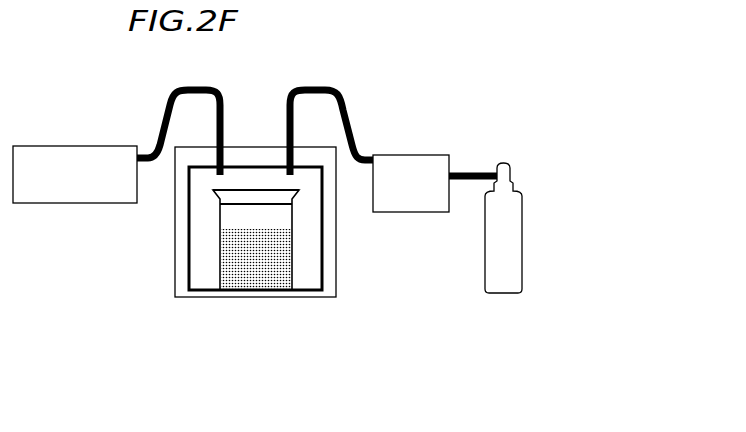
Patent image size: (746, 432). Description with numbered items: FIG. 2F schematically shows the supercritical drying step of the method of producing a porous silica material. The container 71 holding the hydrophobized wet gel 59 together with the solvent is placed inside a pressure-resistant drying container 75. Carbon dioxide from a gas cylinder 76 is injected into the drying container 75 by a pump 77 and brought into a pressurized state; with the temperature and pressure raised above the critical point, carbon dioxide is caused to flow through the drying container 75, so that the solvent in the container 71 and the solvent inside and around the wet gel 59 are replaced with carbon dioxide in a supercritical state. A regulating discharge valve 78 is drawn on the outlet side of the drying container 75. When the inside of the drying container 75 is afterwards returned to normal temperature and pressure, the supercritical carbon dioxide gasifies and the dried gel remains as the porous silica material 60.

The regulating discharge valve 78 is at (121, 155).
The pump 77 is at (425, 163).
The gas cylinder 76 is at (511, 181).
The drying container 75 is at (307, 291).
The container 71 is at (220, 217).
The wet gel 59 is at (230, 263).
The porous silica material 60 is at (196, 259).